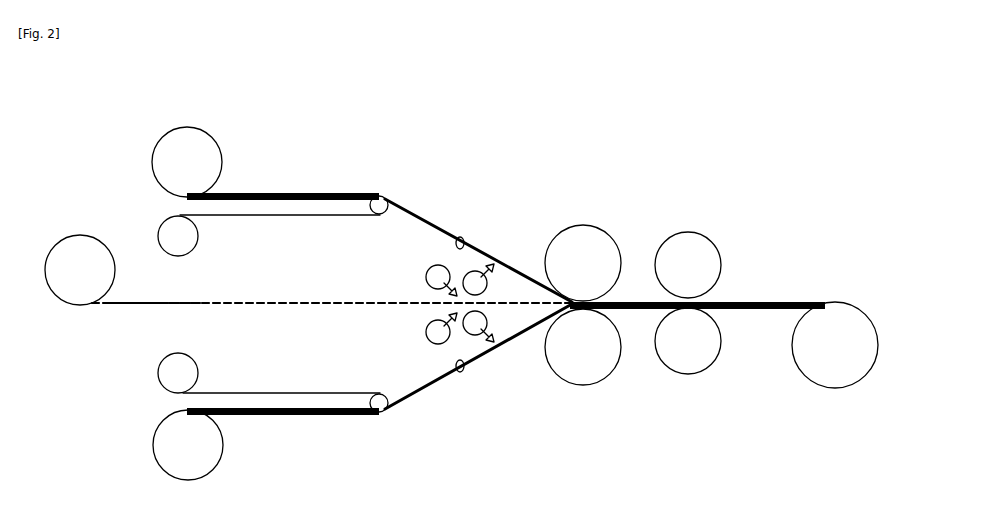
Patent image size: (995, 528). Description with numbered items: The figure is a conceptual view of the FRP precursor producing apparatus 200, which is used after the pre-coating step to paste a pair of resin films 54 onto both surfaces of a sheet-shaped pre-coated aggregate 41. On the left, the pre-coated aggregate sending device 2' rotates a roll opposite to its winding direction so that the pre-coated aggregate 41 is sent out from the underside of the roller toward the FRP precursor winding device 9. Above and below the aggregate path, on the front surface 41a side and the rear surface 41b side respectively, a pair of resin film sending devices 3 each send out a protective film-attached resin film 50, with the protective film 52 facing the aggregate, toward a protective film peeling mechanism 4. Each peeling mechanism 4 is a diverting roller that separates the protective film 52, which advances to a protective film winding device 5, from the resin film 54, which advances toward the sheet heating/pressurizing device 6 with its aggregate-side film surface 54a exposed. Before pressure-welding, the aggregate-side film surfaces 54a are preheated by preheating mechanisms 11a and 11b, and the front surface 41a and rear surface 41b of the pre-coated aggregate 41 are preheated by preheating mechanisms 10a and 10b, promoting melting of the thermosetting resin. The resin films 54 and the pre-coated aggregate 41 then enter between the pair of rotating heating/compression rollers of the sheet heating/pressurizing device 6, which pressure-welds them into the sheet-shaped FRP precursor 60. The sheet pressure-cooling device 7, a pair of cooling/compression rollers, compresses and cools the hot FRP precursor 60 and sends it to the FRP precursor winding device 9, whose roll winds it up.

The pre-coated aggregate sending device 2' is at (80, 255).
The resin film sending device 3 is at (179, 131).
The protective film peeling mechanism 4 is at (372, 198).
The protective film winding device 5 is at (191, 249).
The sheet heating/pressurizing device 6 is at (585, 386).
The sheet pressure-cooling device 7 is at (688, 375).
The FRP precursor winding device 9 is at (856, 310).
The preheating mechanism 10a is at (424, 269).
The preheating mechanism 10b is at (426, 338).
The preheating mechanism 11a is at (487, 287).
The preheating mechanism 11b is at (487, 319).
The pre-coated aggregate 41 is at (134, 302).
The front surface 41a is at (169, 302).
The rear surface 41b is at (160, 306).
The protective film-attached resin film 50 is at (283, 191).
The protective film 52 is at (277, 216).
The resin film 54 is at (429, 227).
The aggregate-side film surface 54a is at (462, 237).
The FRP precursor 60 is at (766, 301).
The FRP precursor producing apparatus 200 is at (757, 143).